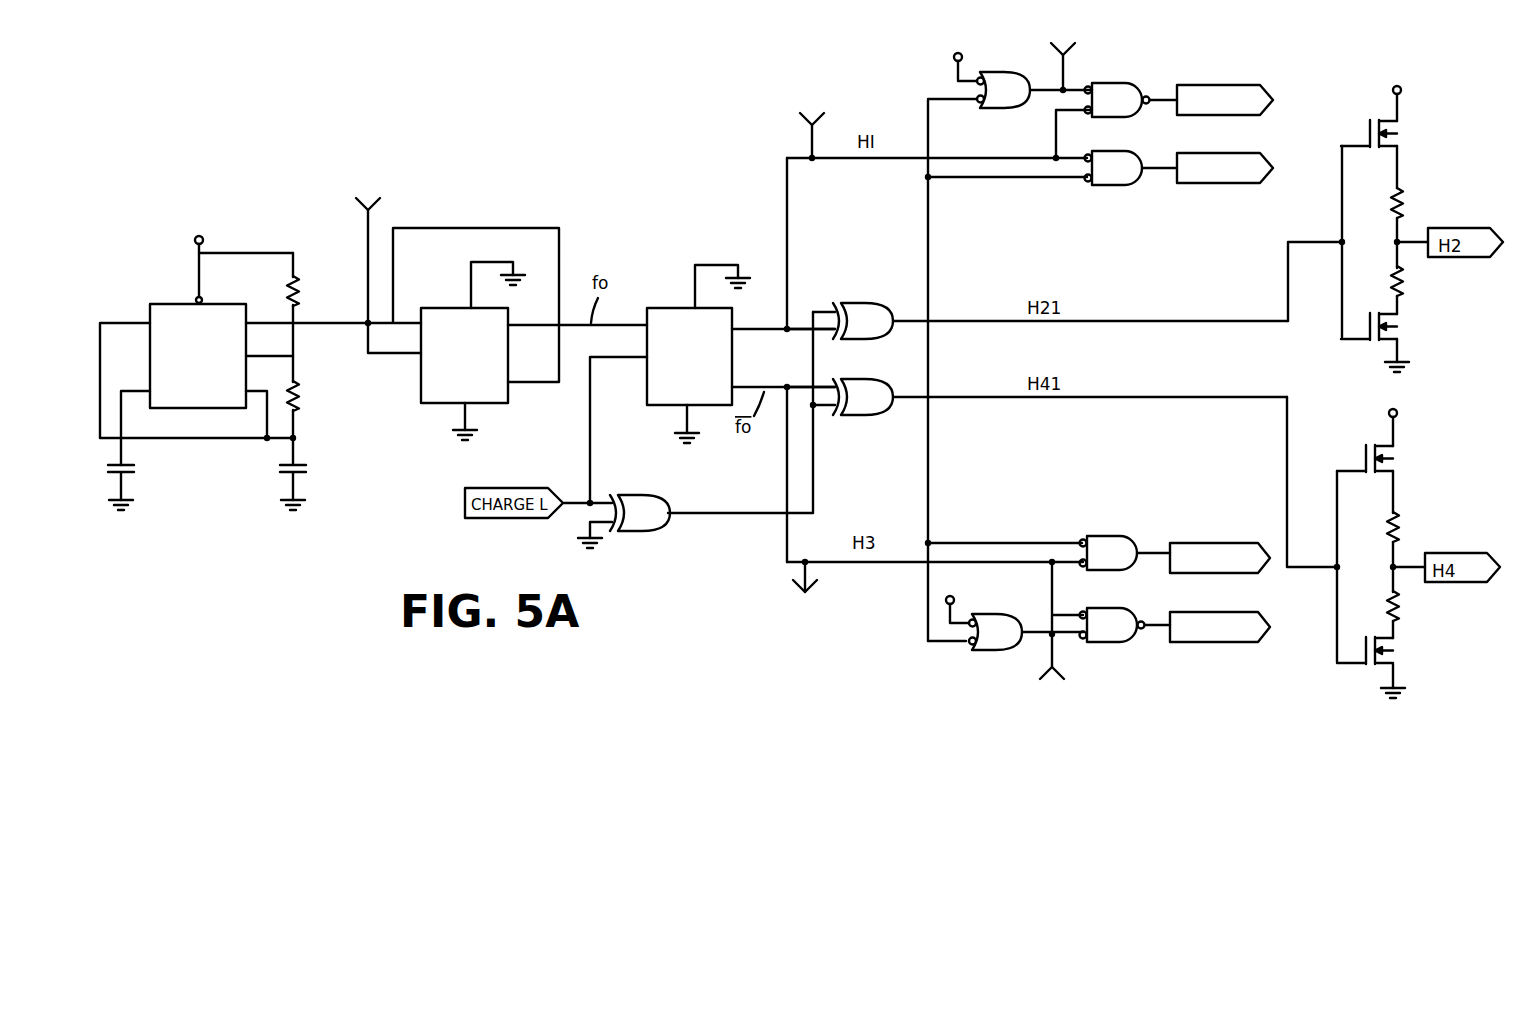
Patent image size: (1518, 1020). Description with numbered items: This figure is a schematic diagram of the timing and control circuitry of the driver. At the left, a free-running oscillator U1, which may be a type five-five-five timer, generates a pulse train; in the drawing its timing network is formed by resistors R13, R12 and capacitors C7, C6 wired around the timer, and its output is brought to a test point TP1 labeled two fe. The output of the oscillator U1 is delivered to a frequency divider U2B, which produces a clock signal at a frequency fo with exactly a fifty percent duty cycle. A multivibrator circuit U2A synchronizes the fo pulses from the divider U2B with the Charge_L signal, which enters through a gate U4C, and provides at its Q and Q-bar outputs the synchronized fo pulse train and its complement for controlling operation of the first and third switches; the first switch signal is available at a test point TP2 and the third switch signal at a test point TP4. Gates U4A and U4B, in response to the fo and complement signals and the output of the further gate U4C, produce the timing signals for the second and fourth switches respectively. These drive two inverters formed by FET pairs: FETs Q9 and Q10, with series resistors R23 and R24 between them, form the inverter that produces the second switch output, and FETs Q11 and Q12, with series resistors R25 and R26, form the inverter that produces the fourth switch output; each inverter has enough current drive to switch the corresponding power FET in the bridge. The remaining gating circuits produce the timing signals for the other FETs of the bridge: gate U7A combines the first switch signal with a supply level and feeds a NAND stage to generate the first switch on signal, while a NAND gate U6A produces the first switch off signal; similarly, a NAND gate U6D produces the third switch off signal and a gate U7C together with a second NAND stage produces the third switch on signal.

The free-running oscillator U1 is at (234, 342).
The resistor R13 is at (311, 288).
The resistor R12 is at (311, 380).
The capacitor C7 is at (135, 483).
The capacitor C6 is at (306, 474).
The test point 2fe TP1 is at (387, 249).
The frequency divider U2B is at (507, 334).
The multivibrator circuit U2A is at (712, 384).
The gate U4C is at (672, 534).
The gate U4A is at (870, 306).
The gate U4B is at (876, 412).
The test point H1 TP2 is at (812, 114).
The gating circuit U7A is at (1010, 70).
The gating circuit U6A is at (1169, 159).
The test point H3 TP4 is at (805, 608).
The gating circuit U6D is at (1165, 549).
The gating circuit U7C is at (1008, 609).
The FET Q9 is at (1396, 124).
The resistor R23 is at (1400, 205).
The resistor R24 is at (1400, 292).
The FET Q10 is at (1400, 342).
The FET Q11 is at (1397, 448).
The resistor R25 is at (1398, 527).
The resistor R26 is at (1398, 614).
The FET Q12 is at (1397, 667).